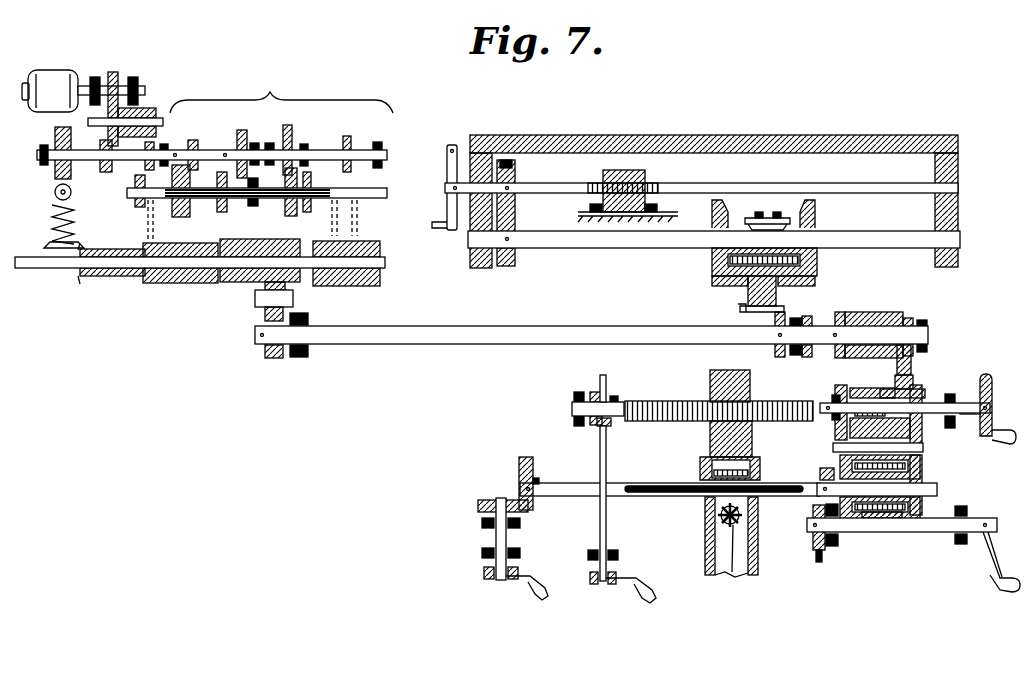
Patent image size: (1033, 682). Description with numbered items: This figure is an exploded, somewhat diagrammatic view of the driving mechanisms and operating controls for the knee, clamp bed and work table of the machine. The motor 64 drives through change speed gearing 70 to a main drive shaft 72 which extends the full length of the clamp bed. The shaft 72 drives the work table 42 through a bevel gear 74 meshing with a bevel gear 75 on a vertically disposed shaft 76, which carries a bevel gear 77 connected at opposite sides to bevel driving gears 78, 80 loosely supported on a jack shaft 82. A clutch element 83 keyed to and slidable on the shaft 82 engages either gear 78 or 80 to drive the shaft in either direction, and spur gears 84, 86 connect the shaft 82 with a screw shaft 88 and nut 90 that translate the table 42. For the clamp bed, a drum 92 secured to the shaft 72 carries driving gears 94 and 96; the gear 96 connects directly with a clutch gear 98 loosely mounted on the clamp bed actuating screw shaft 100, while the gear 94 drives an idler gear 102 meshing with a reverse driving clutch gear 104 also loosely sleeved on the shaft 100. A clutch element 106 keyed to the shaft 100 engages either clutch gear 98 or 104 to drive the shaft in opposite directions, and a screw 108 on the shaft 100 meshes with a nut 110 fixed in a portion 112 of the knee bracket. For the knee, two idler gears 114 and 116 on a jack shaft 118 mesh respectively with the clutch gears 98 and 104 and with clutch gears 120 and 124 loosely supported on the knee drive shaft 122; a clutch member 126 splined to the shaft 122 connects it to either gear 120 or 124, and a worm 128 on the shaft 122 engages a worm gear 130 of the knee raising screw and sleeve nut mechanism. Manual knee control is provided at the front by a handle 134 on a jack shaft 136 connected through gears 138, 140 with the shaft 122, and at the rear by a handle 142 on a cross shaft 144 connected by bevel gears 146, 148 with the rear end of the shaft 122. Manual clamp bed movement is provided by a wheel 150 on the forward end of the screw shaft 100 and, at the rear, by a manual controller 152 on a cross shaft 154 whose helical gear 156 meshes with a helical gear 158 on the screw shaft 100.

The work table 42 is at (958, 163).
The motor 64 is at (52, 70).
The change speed gearing 70 is at (204, 215).
The main drive shaft 72 is at (370, 344).
The bevel gear 74 is at (775, 352).
The bevel gear 75 is at (740, 310).
The vertically disposed shaft 76 is at (748, 292).
The bevel gear 77 is at (712, 280).
The bevel driving gear 78 is at (712, 260).
The bevel driving gear 80 is at (817, 260).
The jack shaft 82 is at (562, 248).
The clutch element 83 is at (762, 215).
The spur gear 84 is at (500, 262).
The spur gear 86 is at (506, 160).
The screw shaft 88 is at (560, 183).
The nut 90 is at (630, 170).
The drum 92 is at (875, 312).
The driving gear 94 is at (907, 318).
The driving gear 96 is at (840, 312).
The clutch gear 98 is at (835, 428).
The clamp bed actuating screw shaft 100 is at (970, 403).
The idler gear 102 is at (912, 364).
The reverse driving clutch gear 104 is at (912, 386).
The clutch element 106 is at (868, 378).
The screw 108 is at (655, 401).
The nut 110 is at (710, 386).
The portion of the bracket 112 is at (710, 438).
The idler gear 114 is at (833, 447).
The idler gear 116 is at (920, 468).
The jack shaft 118 is at (922, 460).
The clutch gear 120 is at (855, 520).
The knee drive shaft 122 is at (670, 483).
The clutch gear 124 is at (918, 520).
The clutch member 126 is at (878, 520).
The worm 128 is at (705, 490).
The worm gear 130 is at (732, 572).
The manually operated handle 134 is at (994, 565).
The jack shaft 136 is at (935, 518).
The gear 138 is at (818, 552).
The gear 140 is at (820, 472).
The manually operable handle 142 is at (522, 582).
The cross shaft 144 is at (496, 537).
The bevel gear 146 is at (480, 500).
The bevel gear 148 is at (524, 462).
The wheel 150 is at (985, 425).
The manual controller 152 is at (626, 584).
The cross shaft 154 is at (600, 530).
The helical gear 156 is at (590, 392).
The helical gear 158 is at (612, 426).